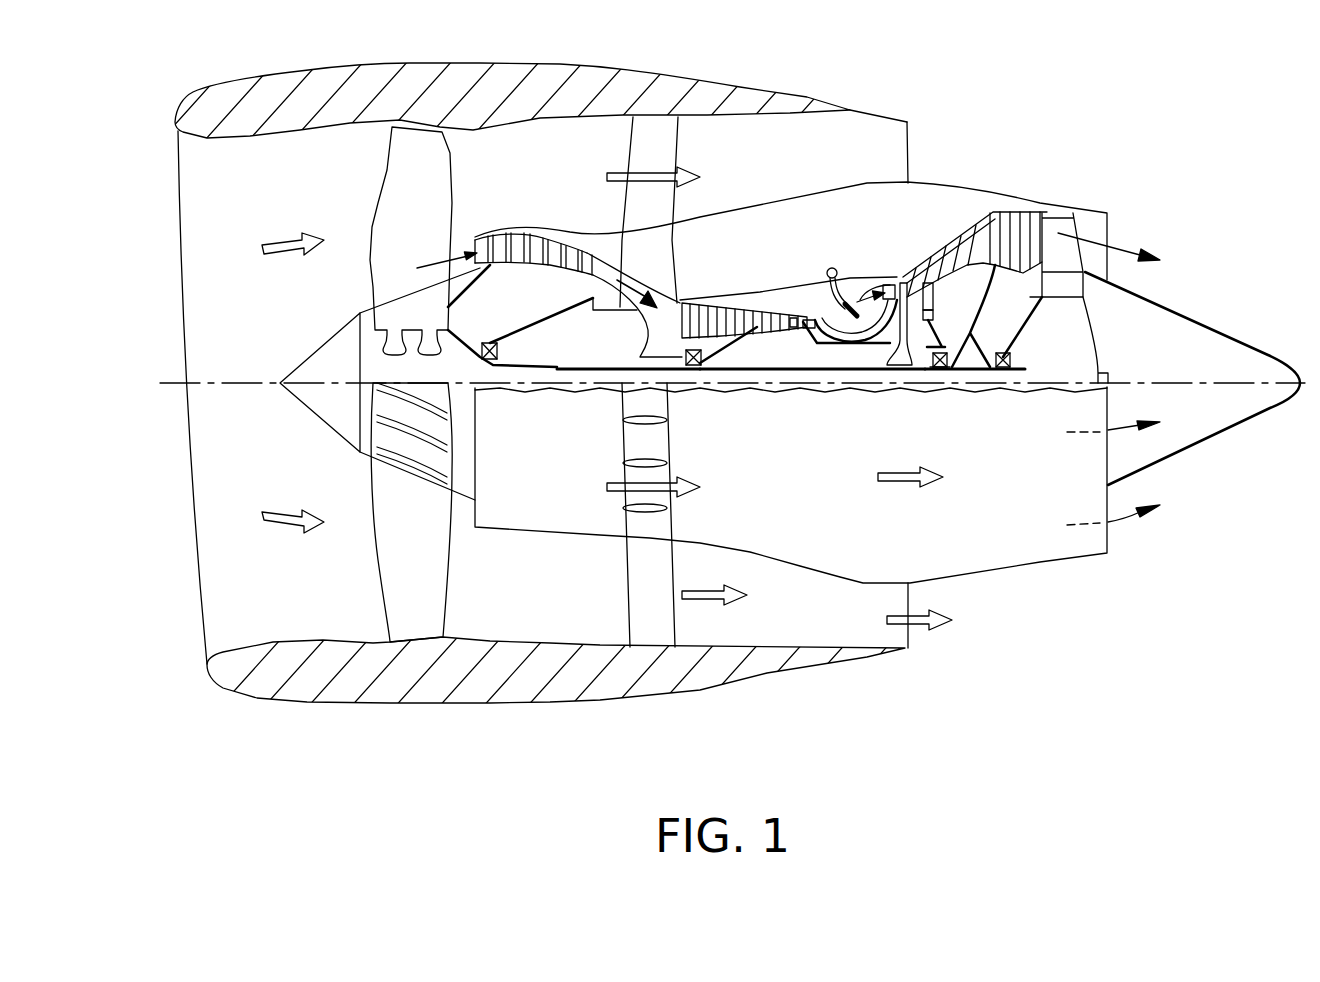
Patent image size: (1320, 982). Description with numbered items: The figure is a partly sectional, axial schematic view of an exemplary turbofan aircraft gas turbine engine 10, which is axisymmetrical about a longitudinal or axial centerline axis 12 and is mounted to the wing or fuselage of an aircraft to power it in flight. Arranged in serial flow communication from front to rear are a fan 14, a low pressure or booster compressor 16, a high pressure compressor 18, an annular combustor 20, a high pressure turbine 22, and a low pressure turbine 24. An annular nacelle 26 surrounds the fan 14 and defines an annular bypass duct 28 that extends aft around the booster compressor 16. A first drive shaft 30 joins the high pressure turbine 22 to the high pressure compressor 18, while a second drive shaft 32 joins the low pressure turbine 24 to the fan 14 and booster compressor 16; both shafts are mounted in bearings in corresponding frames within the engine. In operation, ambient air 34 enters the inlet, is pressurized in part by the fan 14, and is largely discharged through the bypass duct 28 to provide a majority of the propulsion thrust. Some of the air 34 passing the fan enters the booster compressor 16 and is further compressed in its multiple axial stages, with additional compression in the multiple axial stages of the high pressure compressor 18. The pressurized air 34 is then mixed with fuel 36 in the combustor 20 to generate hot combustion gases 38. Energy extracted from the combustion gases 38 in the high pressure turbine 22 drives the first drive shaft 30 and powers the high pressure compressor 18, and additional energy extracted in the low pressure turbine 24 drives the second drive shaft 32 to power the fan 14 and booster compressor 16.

The turbofan aircraft gas turbine engine 10 is at (1062, 98).
The longitudinal or axial centerline axis 12 is at (1185, 383).
The fan 14 is at (427, 224).
The booster compressor 16 is at (525, 218).
The high pressure compressor 18 is at (723, 293).
The annular combustor 20 is at (855, 285).
The high pressure turbine 22 is at (903, 267).
The low pressure turbine 24 is at (992, 205).
The annular nacelle 26 is at (476, 110).
The annular bypass duct 28 is at (799, 166).
The first drive shaft 30 is at (817, 346).
The second drive shaft 32 is at (742, 371).
The ambient air 34 is at (640, 280).
The fuel 36 is at (829, 262).
The combustion gases 38 is at (858, 288).